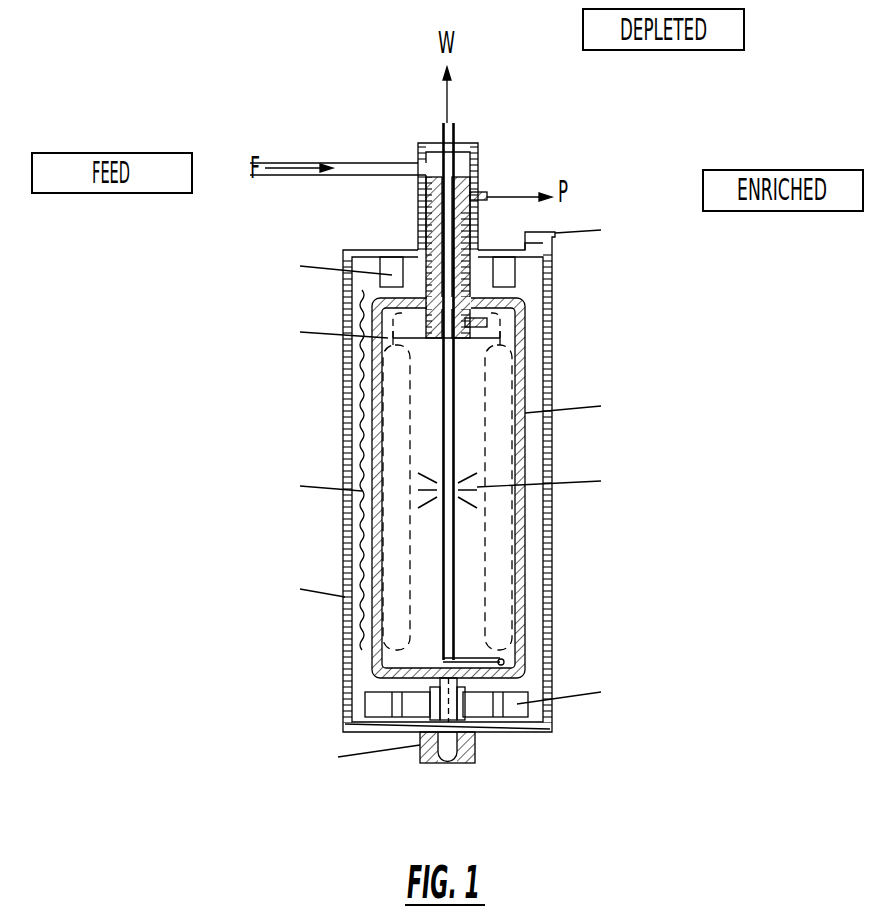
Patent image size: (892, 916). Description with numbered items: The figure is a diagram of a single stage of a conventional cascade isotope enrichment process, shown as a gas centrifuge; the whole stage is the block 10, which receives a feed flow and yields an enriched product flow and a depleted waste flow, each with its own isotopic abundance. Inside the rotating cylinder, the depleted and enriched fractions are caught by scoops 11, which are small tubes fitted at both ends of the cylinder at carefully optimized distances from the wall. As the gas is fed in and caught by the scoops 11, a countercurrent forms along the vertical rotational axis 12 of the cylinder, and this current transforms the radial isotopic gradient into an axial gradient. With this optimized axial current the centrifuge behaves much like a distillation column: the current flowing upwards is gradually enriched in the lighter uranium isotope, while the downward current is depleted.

The block 10 is at (575, 812).
The scoop (top scoop / bottom scoop) 11 is at (468, 320).
The rotational axis 12 is at (446, 563).